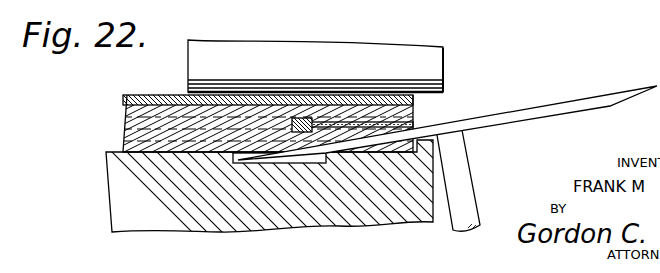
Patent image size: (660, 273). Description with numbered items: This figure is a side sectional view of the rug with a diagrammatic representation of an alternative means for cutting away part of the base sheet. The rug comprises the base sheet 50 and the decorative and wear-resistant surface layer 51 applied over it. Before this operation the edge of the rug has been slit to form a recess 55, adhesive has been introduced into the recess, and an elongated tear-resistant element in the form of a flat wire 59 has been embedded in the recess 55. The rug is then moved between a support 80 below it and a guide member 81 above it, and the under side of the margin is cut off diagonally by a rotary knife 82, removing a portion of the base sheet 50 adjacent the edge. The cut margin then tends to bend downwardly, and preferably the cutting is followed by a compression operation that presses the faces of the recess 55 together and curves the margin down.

The base sheet 50 is at (128, 122).
The decorative and wear-resistant surface layer 51 is at (166, 97).
The recess 55 is at (358, 120).
The flat wire 59 is at (300, 120).
The support 80 is at (132, 192).
The guide member 81 is at (323, 58).
The rotary knife 82 is at (533, 108).